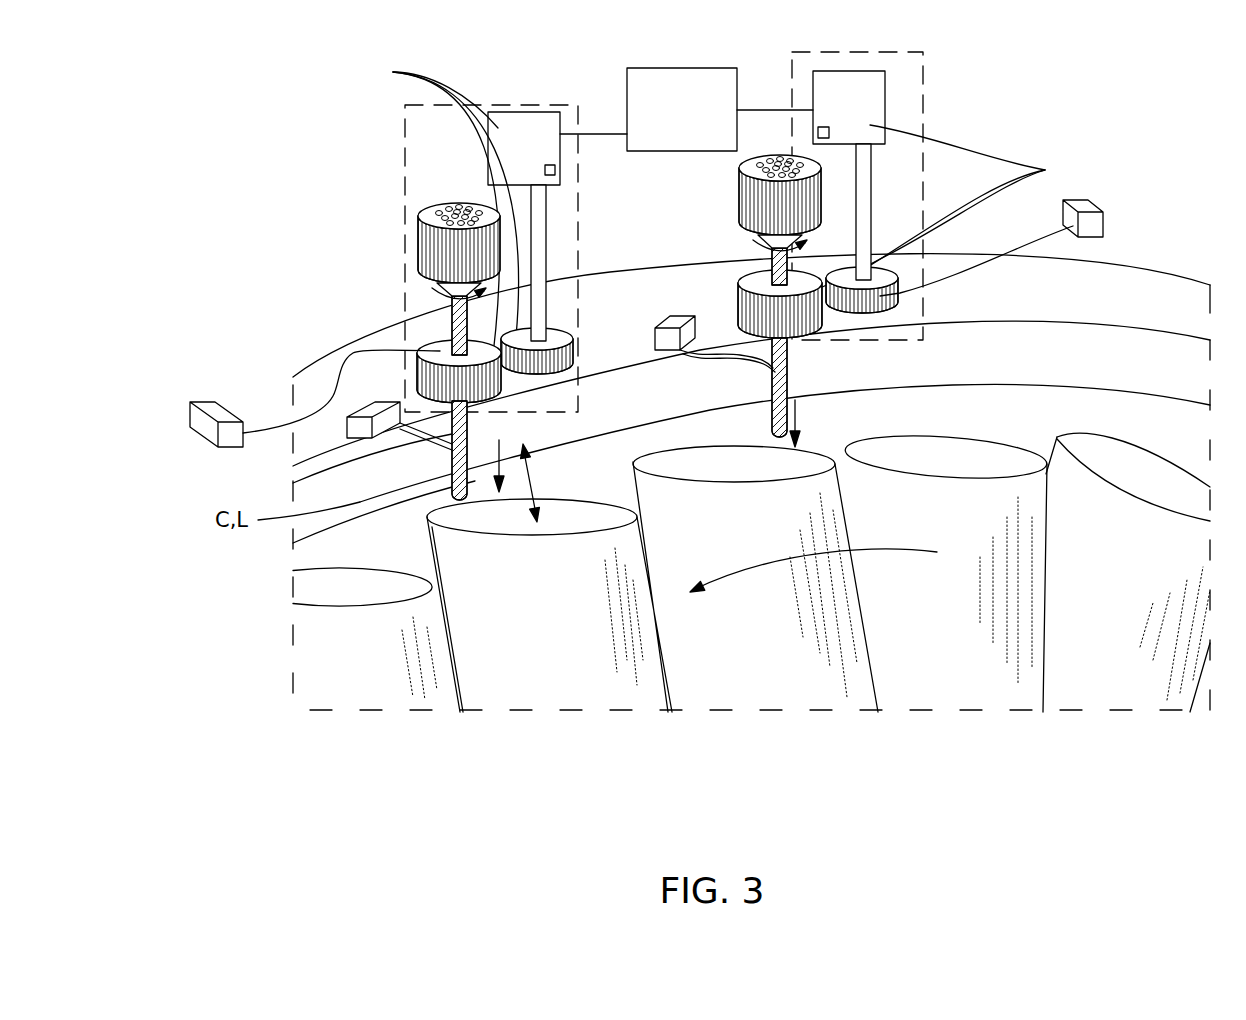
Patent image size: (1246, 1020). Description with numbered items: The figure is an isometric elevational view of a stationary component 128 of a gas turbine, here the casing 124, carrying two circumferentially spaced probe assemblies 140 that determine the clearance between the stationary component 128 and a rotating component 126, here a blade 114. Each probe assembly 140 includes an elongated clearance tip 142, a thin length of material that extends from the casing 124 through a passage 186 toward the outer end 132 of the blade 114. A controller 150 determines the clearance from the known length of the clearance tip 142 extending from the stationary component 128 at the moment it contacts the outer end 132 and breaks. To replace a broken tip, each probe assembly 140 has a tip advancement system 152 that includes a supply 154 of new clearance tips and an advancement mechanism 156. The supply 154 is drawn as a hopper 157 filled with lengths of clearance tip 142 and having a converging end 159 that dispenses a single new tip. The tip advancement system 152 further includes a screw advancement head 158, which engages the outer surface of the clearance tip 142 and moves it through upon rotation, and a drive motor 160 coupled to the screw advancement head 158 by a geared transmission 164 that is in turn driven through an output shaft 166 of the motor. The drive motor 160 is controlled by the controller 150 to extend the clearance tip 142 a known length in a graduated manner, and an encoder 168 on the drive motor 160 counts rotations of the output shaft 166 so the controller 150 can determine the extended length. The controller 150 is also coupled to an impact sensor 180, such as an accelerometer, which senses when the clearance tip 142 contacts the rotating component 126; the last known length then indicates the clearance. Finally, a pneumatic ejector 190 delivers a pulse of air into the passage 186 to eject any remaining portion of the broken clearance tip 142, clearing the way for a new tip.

The blade 114 is at (751, 624).
The rotating component 126 is at (547, 685).
The outer end 132 is at (568, 514).
The casing 124 is at (317, 383).
The stationary component 128 is at (667, 398).
The probe assembly 140 is at (378, 303).
The elongated clearance tip 142 is at (452, 343).
The controller 150 is at (662, 122).
The tip advancement system 152 is at (405, 157).
The supply 154 is at (420, 248).
The hopper 157 is at (539, 219).
The advancement mechanism 156 is at (722, 208).
The screw advancement head 158 is at (445, 354).
The converging end 159 is at (460, 289).
The drive motor 160 is at (506, 151).
The geared transmission 164 is at (570, 360).
The output shaft 166 is at (543, 250).
The encoder 168 is at (556, 169).
The impact sensor 180 is at (203, 428).
The passage 186 is at (470, 438).
The pneumatic ejector 190 is at (347, 424).